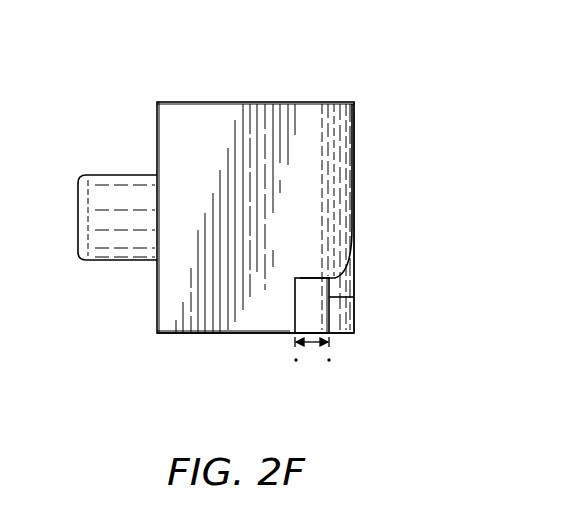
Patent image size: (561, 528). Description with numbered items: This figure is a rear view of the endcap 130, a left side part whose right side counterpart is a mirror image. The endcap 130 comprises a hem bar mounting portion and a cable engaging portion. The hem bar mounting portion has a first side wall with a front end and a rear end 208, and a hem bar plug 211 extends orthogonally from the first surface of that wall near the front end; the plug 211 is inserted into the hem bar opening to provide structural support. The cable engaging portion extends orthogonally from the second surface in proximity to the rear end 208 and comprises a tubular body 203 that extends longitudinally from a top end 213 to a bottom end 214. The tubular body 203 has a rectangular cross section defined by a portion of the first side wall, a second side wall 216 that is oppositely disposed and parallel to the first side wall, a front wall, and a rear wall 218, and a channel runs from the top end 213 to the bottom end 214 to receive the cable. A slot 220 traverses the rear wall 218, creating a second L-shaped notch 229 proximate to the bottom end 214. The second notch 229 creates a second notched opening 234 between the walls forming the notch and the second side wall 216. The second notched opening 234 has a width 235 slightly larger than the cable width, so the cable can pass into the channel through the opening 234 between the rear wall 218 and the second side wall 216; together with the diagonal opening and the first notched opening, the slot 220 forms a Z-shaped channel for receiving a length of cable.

The endcap 130 is at (259, 59).
The top end 213 is at (214, 101).
The rear end 208 is at (164, 143).
The hem bar plug 211 is at (78, 213).
The tubular body 203 is at (309, 128).
The second L-shaped notch 229 is at (320, 277).
The second notched opening 234 is at (305, 301).
The slot 220 is at (345, 283).
The second side wall 216 is at (354, 317).
The bottom end 214 is at (185, 335).
The rear wall 218 is at (265, 312).
The width 235 is at (313, 353).